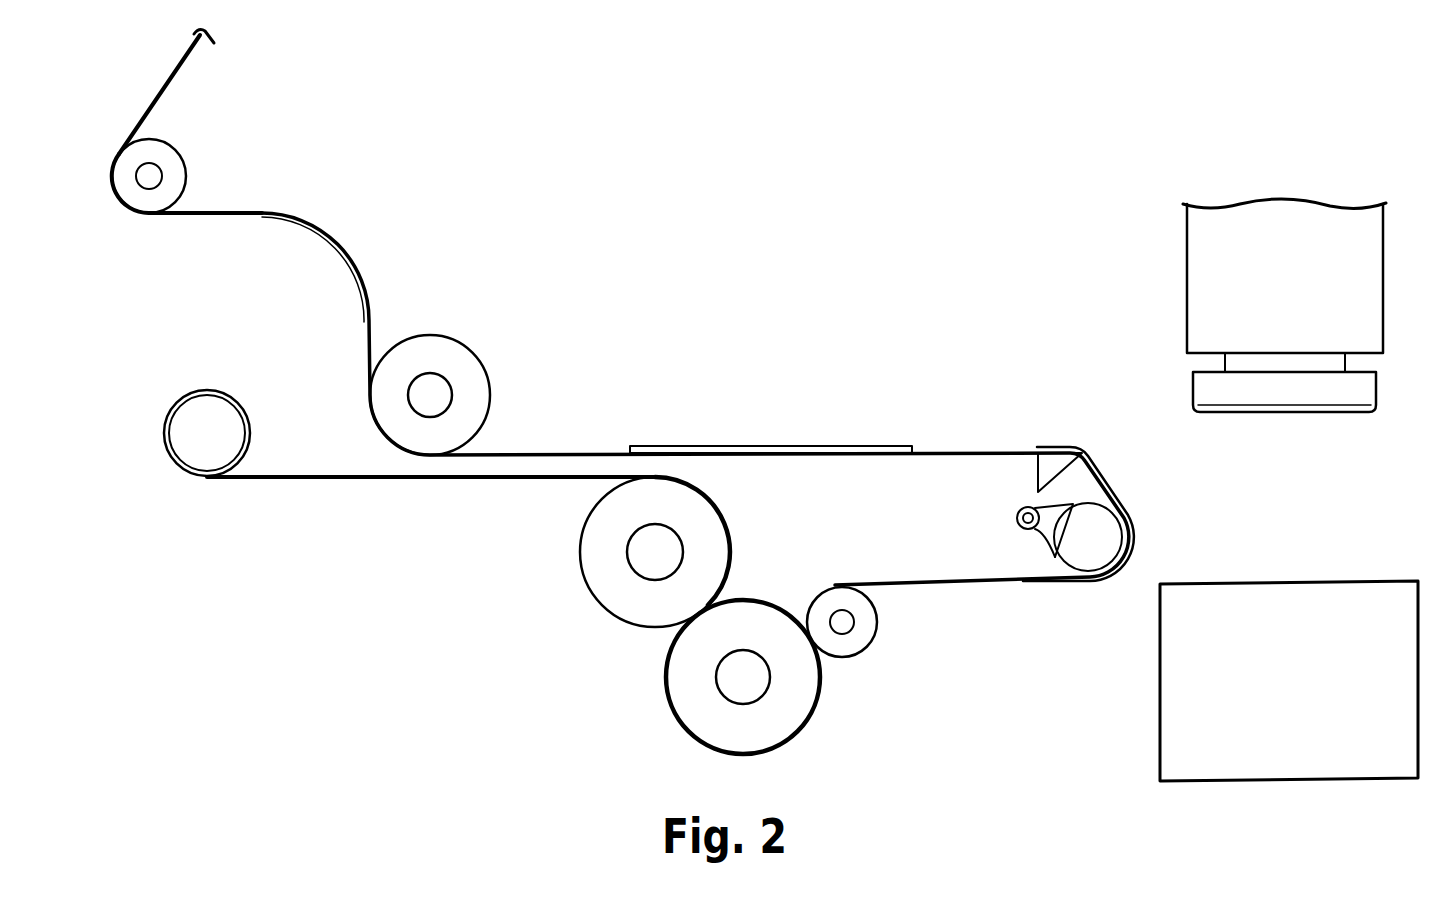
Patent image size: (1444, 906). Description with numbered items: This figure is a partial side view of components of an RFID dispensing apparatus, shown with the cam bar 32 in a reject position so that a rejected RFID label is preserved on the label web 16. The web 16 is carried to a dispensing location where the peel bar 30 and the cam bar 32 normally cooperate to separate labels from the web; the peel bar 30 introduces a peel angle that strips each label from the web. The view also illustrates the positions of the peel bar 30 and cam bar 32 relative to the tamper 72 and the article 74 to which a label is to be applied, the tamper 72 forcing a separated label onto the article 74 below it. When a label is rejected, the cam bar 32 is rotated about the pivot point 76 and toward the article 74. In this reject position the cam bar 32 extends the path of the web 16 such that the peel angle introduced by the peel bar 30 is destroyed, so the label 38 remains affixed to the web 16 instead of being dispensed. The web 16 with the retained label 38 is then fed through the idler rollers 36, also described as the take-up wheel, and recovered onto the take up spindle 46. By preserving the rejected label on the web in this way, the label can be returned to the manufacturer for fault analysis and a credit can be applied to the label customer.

The web 16 is at (971, 449).
The peel bar 30 is at (1037, 470).
The cam bar 32 is at (1022, 530).
The idler rollers 36 is at (812, 590).
The label 38 is at (1108, 482).
The take up spindle 46 is at (208, 390).
The tamper 72 is at (1193, 387).
The article 74 is at (1160, 680).
The pivot point 76 is at (1017, 518).